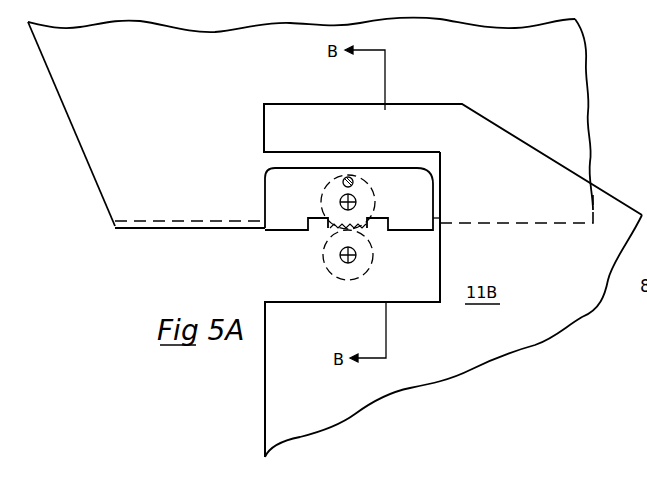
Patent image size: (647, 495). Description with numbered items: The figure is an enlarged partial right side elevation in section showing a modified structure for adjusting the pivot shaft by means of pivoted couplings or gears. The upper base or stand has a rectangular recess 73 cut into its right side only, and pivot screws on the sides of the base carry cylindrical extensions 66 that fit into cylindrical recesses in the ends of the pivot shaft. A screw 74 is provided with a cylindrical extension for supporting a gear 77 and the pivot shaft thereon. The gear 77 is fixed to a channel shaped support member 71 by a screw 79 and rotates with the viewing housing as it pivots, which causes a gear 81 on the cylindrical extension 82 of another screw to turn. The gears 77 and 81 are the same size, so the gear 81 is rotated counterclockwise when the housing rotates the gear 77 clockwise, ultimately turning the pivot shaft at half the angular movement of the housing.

The cylindrical extension 66 is at (352, 196).
The channel shaped support member 71 is at (424, 172).
The rectangular recess 73 is at (422, 301).
The screw 74 is at (642, 187).
The gear 77 is at (322, 197).
The screw 79 is at (347, 181).
The gear 81 is at (326, 249).
The cylindrical extension 82 is at (356, 255).